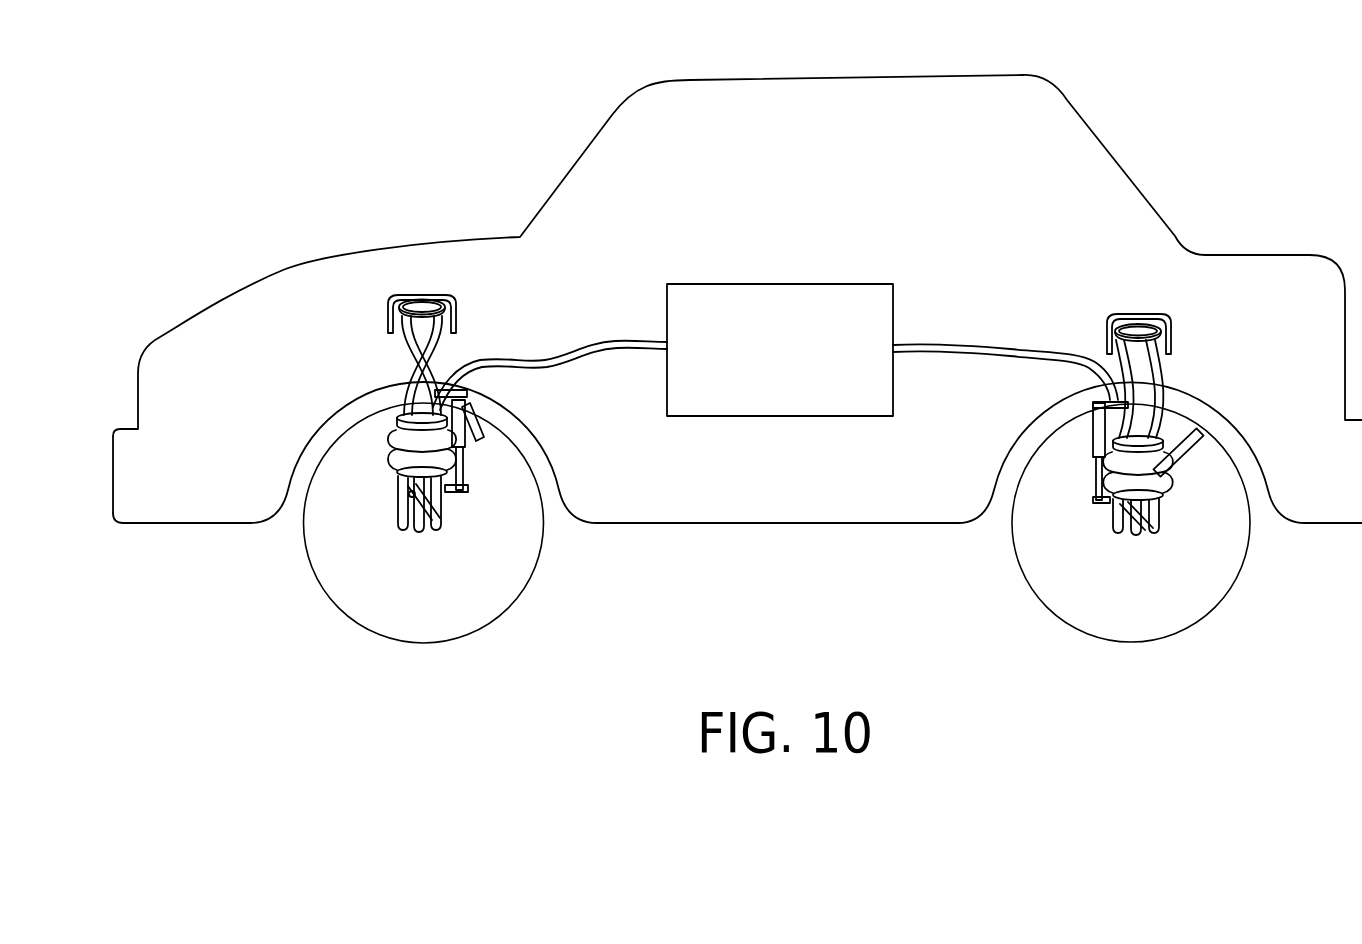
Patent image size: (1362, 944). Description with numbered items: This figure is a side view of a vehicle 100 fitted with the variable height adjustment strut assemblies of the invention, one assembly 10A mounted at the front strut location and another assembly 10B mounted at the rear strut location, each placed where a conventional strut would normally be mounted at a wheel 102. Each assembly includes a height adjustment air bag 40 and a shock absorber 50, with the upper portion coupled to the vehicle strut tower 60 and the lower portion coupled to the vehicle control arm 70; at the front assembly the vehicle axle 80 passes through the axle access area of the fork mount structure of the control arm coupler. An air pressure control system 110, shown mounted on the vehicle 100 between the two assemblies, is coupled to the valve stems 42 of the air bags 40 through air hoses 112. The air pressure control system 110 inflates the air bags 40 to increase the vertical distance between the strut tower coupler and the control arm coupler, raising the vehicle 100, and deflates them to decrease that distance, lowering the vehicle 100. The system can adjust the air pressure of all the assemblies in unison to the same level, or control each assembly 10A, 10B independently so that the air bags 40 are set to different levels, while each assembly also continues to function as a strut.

The vehicle 100 is at (1042, 76).
The wheel 102 is at (528, 587).
The air pressure control system 110 is at (848, 284).
The air hoses 112 is at (556, 352).
The vehicle variable height adjustment strut assembly 10A is at (398, 356).
The vehicle variable height adjustment strut assembly 10B is at (1168, 374).
The height adjustment air bag 40 is at (397, 447).
The valve stem 42 is at (408, 412).
The shock absorber 50 is at (1093, 433).
The vehicle strut tower 60 is at (456, 299).
The vehicle control arm 70 is at (478, 418).
The vehicle axle 80 is at (420, 486).